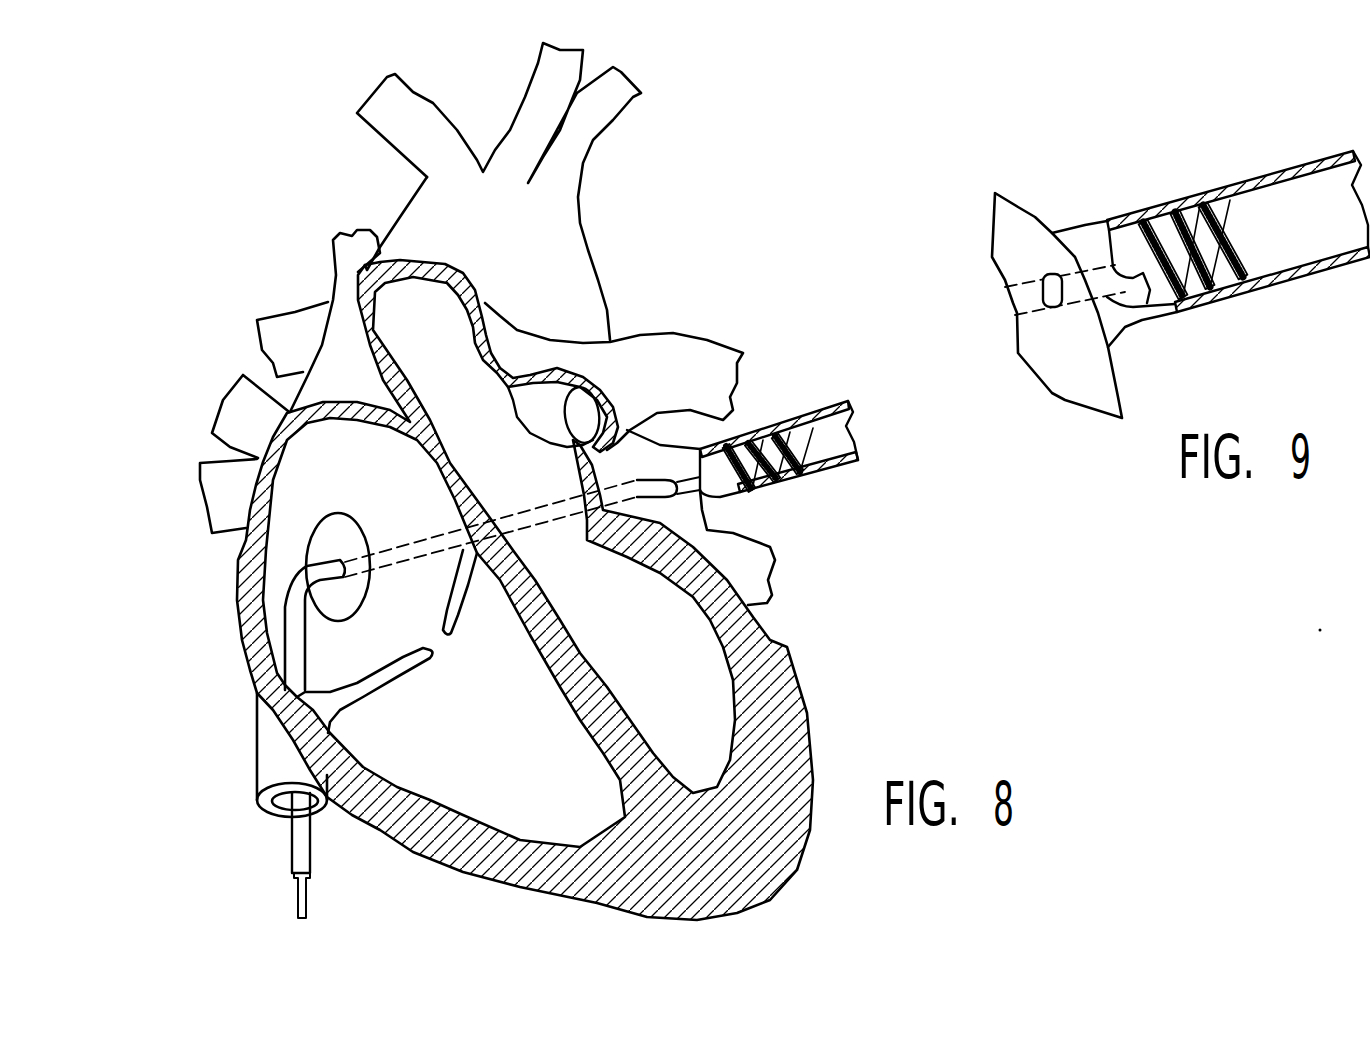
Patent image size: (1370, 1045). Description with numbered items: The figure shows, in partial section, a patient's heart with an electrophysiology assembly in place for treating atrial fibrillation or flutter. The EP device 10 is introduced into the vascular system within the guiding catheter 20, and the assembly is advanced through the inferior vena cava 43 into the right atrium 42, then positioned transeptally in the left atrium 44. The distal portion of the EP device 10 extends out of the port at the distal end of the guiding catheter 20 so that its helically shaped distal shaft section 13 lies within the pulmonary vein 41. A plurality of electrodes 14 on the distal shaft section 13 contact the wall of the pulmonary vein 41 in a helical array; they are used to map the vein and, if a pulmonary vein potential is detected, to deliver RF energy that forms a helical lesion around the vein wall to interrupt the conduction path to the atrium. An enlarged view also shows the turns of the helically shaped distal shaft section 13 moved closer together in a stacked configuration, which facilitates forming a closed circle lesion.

In FIG. 8, the EP device 10 is at (297, 908).
In FIG. 8, the helically shaped distal shaft section 13 is at (740, 443).
In FIG. 9, the helically shaped distal shaft section 13 is at (1165, 222).
In FIG. 8, the electrodes 14 is at (276, 267).
In FIG. 9, the electrodes 14 is at (1224, 207).
In FIG. 8, the guiding catheter 20 is at (290, 853).
In FIG. 8, the pulmonary vein 41 is at (830, 462).
In FIG. 9, the pulmonary vein 41 is at (1297, 250).
In FIG. 8, the right atrium 42 is at (377, 503).
In FIG. 8, the inferior vena cava 43 is at (256, 738).
In FIG. 8, the left atrium 44 is at (556, 483).